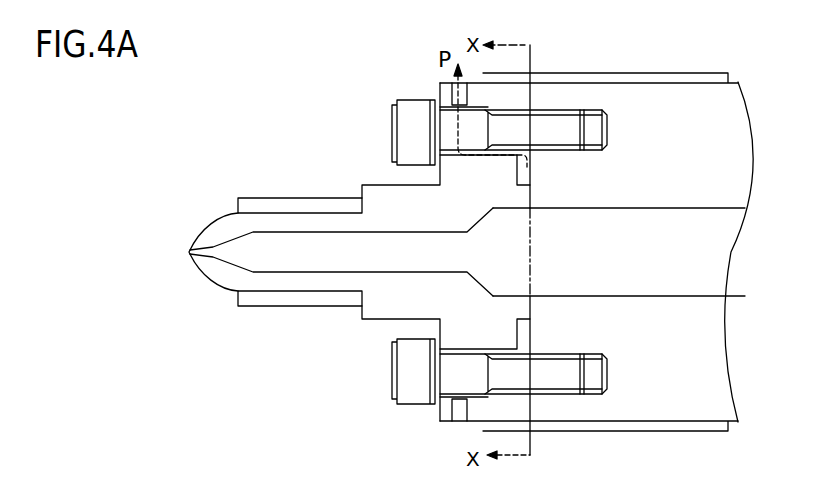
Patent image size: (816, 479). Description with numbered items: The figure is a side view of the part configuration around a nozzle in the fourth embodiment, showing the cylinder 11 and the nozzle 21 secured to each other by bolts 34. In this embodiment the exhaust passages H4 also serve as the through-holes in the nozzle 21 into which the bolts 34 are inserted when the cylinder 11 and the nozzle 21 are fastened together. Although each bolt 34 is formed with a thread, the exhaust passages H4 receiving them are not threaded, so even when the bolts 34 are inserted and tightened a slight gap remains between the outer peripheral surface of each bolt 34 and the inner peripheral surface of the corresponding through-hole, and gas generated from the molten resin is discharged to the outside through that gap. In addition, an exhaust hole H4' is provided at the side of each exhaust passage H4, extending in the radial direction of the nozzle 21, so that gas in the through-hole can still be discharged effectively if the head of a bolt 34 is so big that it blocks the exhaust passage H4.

The cylinder 11 is at (680, 117).
The nozzle 21 is at (386, 305).
The bolts 34 is at (408, 148).
The exhaust passages H4 is at (509, 102).
The exhaust hole H4' is at (415, 90).